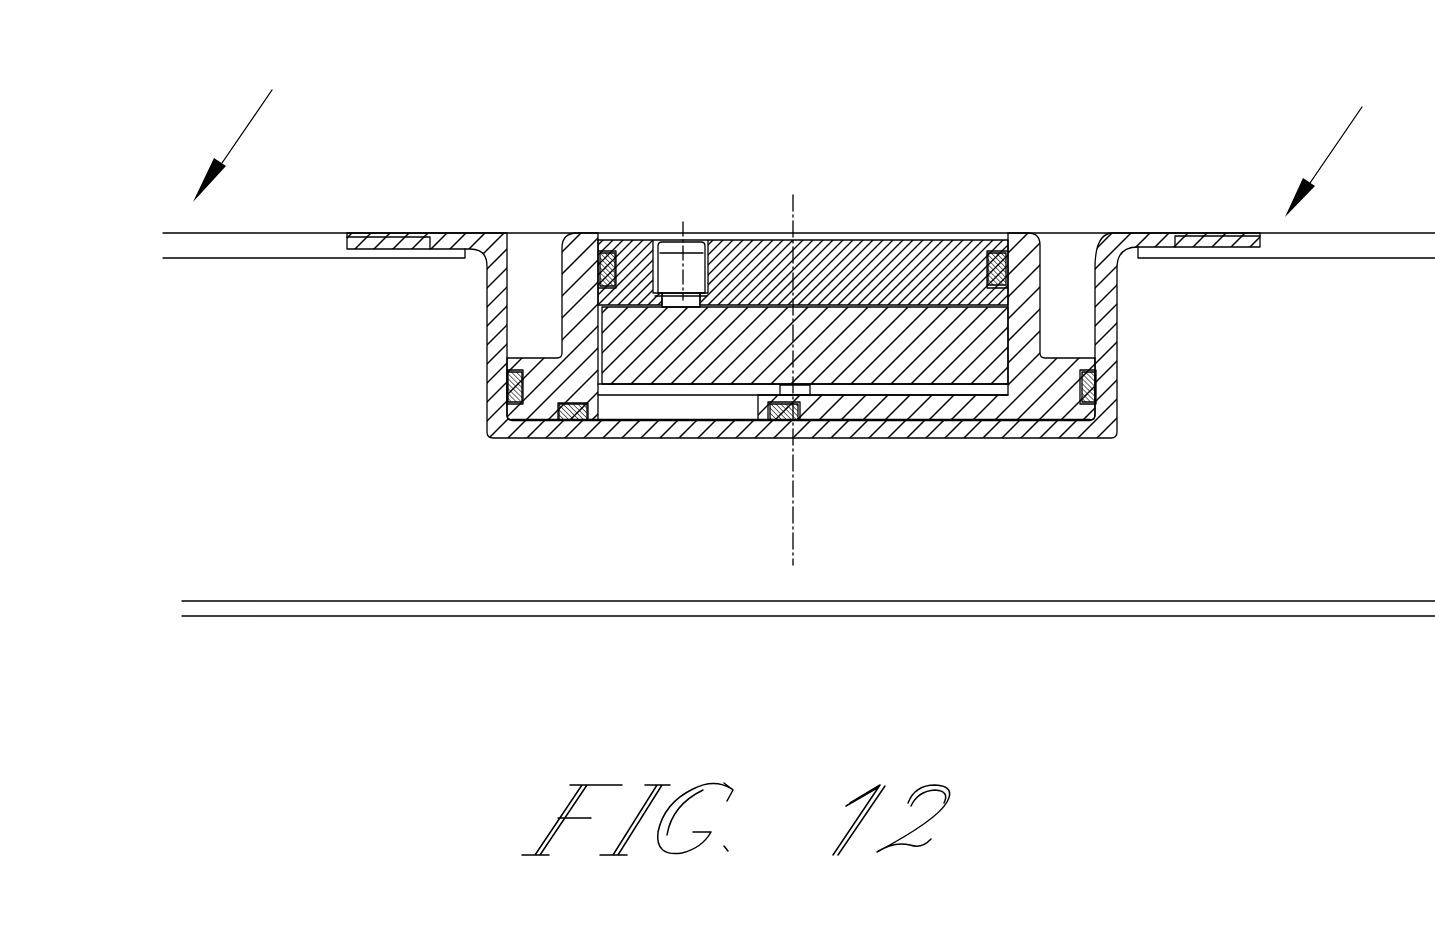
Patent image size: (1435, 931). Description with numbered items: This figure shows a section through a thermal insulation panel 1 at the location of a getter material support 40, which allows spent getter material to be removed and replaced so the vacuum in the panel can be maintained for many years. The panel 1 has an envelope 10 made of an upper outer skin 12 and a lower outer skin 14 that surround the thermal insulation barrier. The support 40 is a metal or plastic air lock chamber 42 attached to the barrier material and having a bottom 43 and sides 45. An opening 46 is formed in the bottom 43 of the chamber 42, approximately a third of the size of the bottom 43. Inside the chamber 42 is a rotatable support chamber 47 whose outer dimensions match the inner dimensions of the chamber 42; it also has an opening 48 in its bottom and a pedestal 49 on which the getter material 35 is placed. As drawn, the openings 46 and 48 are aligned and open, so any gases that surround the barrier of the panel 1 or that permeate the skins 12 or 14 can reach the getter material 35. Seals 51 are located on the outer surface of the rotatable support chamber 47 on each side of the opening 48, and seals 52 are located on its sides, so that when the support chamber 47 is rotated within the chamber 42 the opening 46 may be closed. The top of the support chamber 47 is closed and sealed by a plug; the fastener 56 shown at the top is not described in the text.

The panel 1 is at (245, 128).
The envelope 10 is at (1346, 144).
The upper outer skin 12 is at (278, 248).
The lower outer skin 14 is at (387, 610).
The getter material 35 is at (955, 326).
The support 40 is at (500, 310).
The air lock chamber 42 is at (900, 218).
The bottom 43 is at (925, 425).
The sides 45 is at (500, 440).
The opening 46 is at (600, 425).
The rotatable support chamber 47 is at (580, 235).
The opening 48 is at (760, 410).
The pedestal 49 is at (805, 396).
The seals 51 is at (575, 420).
The seals 52 is at (505, 390).
The bolt 56 is at (686, 240).